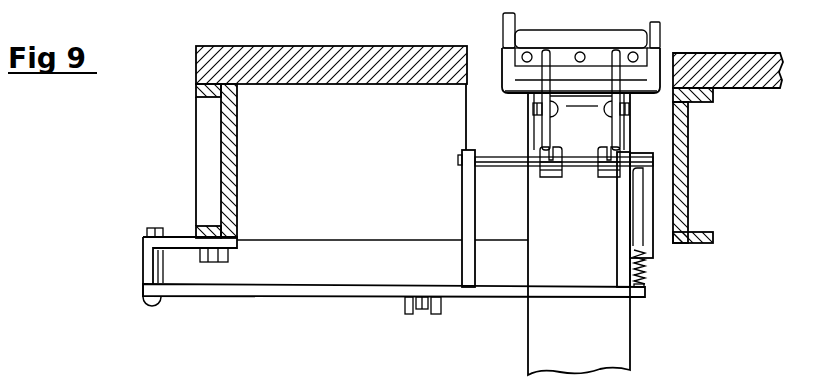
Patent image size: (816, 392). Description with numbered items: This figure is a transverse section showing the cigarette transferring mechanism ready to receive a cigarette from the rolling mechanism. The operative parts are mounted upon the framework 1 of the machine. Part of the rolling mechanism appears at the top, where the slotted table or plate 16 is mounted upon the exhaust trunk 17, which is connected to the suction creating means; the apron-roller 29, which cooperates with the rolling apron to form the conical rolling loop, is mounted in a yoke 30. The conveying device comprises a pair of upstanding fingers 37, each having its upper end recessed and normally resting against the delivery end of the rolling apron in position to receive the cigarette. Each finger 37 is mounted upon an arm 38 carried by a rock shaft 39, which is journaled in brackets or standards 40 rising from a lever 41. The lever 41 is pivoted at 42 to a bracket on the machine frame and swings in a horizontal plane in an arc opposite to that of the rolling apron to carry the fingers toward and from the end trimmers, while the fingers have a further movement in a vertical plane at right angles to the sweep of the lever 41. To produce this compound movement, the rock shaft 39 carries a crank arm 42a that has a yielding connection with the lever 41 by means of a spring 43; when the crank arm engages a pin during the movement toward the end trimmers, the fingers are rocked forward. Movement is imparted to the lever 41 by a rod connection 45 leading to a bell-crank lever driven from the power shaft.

The framework 1 is at (238, 154).
The slotted table or plate 16 is at (653, 63).
The exhaust trunk 17 is at (433, 234).
The apron-roller 29 is at (652, 40).
The yoke 30 is at (659, 24).
The upstanding fingers 37 is at (608, 75).
The arm 38 is at (605, 118).
The rock shaft 39 is at (577, 161).
The brackets or standards 40 is at (476, 193).
The lever 41 is at (311, 292).
The pivot 42 is at (150, 272).
The crank arm 42a is at (648, 210).
The spring 43 is at (645, 267).
The rod connection 45 is at (424, 314).